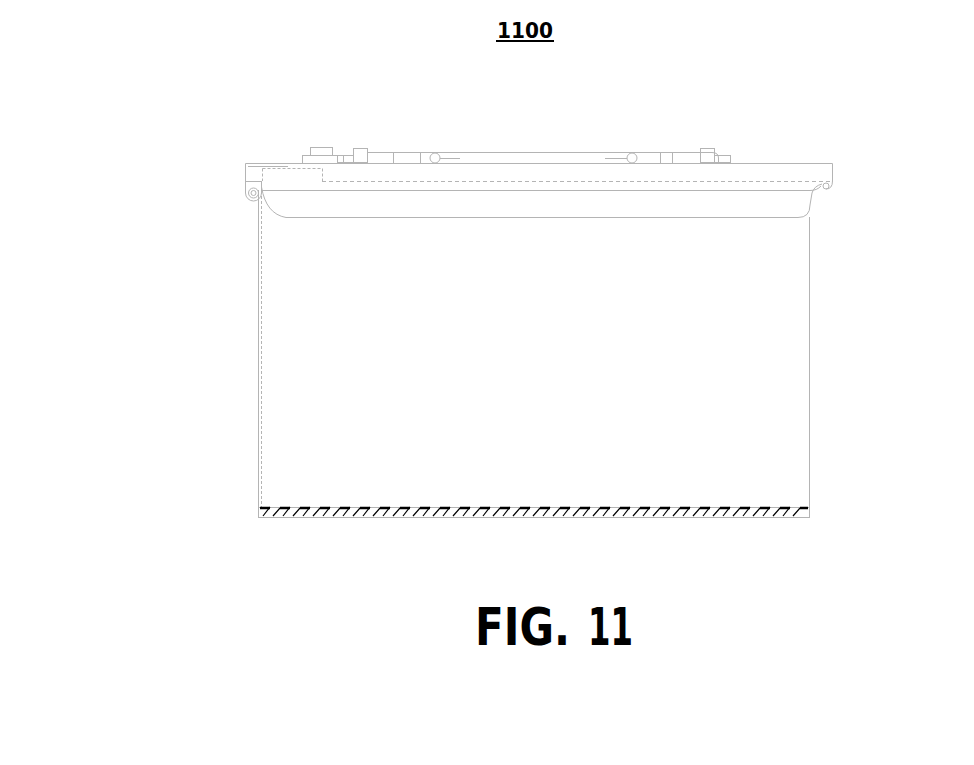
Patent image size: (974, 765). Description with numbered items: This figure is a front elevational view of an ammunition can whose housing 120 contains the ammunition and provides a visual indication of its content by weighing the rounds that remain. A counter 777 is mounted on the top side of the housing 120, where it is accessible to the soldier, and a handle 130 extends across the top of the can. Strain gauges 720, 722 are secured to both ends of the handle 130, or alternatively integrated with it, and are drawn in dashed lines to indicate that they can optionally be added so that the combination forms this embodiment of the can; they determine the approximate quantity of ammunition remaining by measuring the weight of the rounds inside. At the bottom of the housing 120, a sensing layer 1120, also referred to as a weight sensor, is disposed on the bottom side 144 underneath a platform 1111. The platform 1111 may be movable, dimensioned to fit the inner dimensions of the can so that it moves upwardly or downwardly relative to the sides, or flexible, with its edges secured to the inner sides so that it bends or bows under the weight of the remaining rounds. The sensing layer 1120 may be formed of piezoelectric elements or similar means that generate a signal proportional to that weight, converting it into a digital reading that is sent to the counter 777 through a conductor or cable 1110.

The housing 120 is at (816, 328).
The handle 130 is at (513, 165).
The bottom side 144 is at (770, 518).
The strain gauge 720 is at (343, 162).
The strain gauge 722 is at (727, 164).
The counter 777 is at (325, 157).
The conductor or cable 1110 is at (293, 178).
The platform 1111 is at (590, 517).
The sensing layer 1120 is at (375, 516).